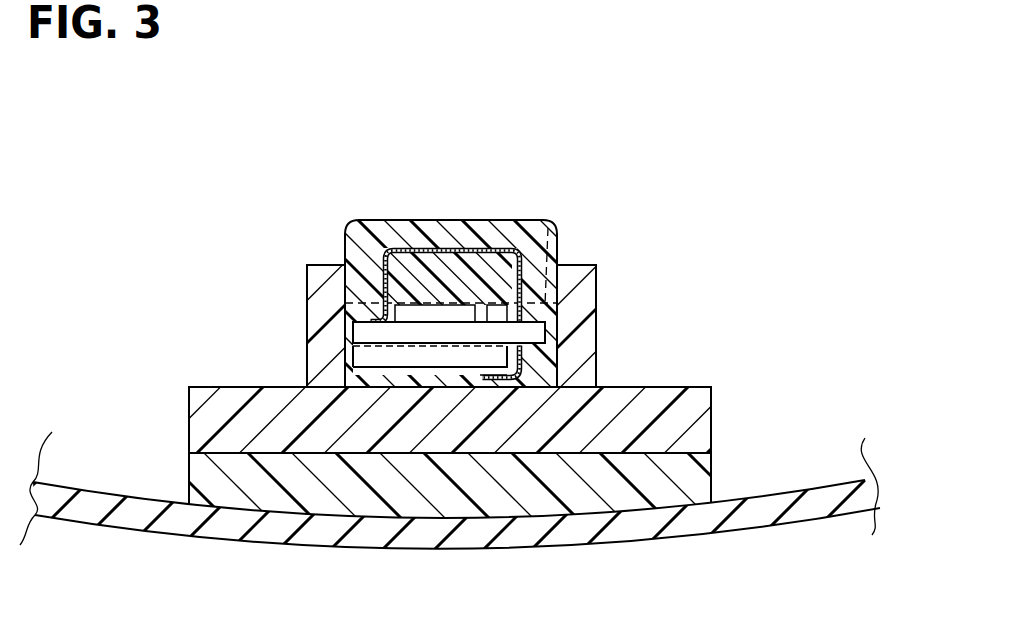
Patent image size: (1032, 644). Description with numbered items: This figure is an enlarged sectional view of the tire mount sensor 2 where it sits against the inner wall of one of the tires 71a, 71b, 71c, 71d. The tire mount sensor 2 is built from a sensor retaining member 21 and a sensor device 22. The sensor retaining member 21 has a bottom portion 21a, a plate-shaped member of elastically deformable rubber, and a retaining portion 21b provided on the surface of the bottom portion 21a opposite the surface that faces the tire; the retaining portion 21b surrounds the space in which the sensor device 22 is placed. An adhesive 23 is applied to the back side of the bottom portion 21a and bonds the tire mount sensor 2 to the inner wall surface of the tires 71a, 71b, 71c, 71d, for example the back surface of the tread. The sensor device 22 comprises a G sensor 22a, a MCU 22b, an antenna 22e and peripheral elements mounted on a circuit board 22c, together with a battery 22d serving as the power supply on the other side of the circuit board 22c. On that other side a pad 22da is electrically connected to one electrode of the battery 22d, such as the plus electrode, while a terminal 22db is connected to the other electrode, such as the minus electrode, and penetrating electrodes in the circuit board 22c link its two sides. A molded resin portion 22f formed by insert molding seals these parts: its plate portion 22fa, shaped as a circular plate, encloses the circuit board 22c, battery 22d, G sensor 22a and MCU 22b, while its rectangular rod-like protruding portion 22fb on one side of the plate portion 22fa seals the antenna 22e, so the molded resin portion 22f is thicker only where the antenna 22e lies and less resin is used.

The tire mount sensor 2 is at (687, 272).
The sensor retaining member 21 is at (850, 348).
The bottom portion 21a is at (712, 405).
The retaining portion 21b is at (596, 370).
The sensor device 22 is at (376, 221).
The G sensor 22a is at (421, 298).
The MCU 22b is at (480, 292).
The circuit board 22c is at (545, 334).
The battery 22d is at (423, 367).
The pad 22da is at (377, 345).
The terminal 22db is at (492, 372).
The antenna 22e is at (535, 309).
The molded resin portion 22f is at (637, 118).
The plate portion 22fa is at (548, 228).
The protruding portion 22fb is at (503, 220).
The adhesive 23 is at (712, 460).
The tire 71a is at (697, 520).
The tire 71b is at (465, 530).
The tire 71c is at (465, 530).
The tire 71d is at (465, 530).